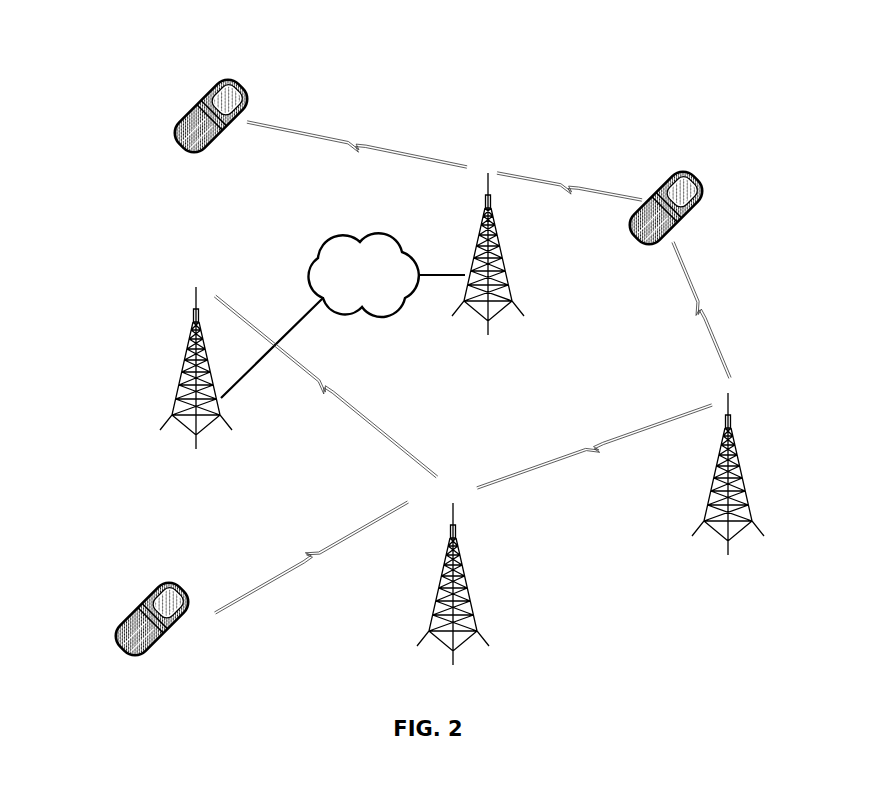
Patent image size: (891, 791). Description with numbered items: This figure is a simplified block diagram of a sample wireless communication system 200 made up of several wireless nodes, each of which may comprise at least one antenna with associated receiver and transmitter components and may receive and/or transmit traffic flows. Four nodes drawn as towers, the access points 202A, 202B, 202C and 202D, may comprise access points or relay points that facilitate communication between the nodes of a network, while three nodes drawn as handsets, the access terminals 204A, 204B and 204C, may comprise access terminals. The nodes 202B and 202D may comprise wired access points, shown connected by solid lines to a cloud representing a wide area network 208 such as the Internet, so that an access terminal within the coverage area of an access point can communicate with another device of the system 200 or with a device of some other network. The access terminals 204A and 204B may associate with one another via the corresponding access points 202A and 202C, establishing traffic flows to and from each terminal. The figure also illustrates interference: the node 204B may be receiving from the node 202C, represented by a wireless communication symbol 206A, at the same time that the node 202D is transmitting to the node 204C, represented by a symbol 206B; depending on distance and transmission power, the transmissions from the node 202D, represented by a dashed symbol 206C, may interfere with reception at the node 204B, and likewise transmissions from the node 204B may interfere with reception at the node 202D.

The wireless communication system 200 is at (412, 45).
The access point 202A is at (468, 583).
The wired access point 202B is at (182, 362).
The access point 202C is at (743, 472).
The wired access point 202D is at (502, 248).
The access terminal 204A is at (142, 613).
The access terminal 204B is at (675, 230).
The access terminal 204C is at (177, 130).
The wireless communication symbol 206A is at (705, 310).
The wireless communication symbol 206B is at (322, 140).
The dashed wireless communication symbol 206C is at (542, 183).
The wide area network 208 is at (347, 233).